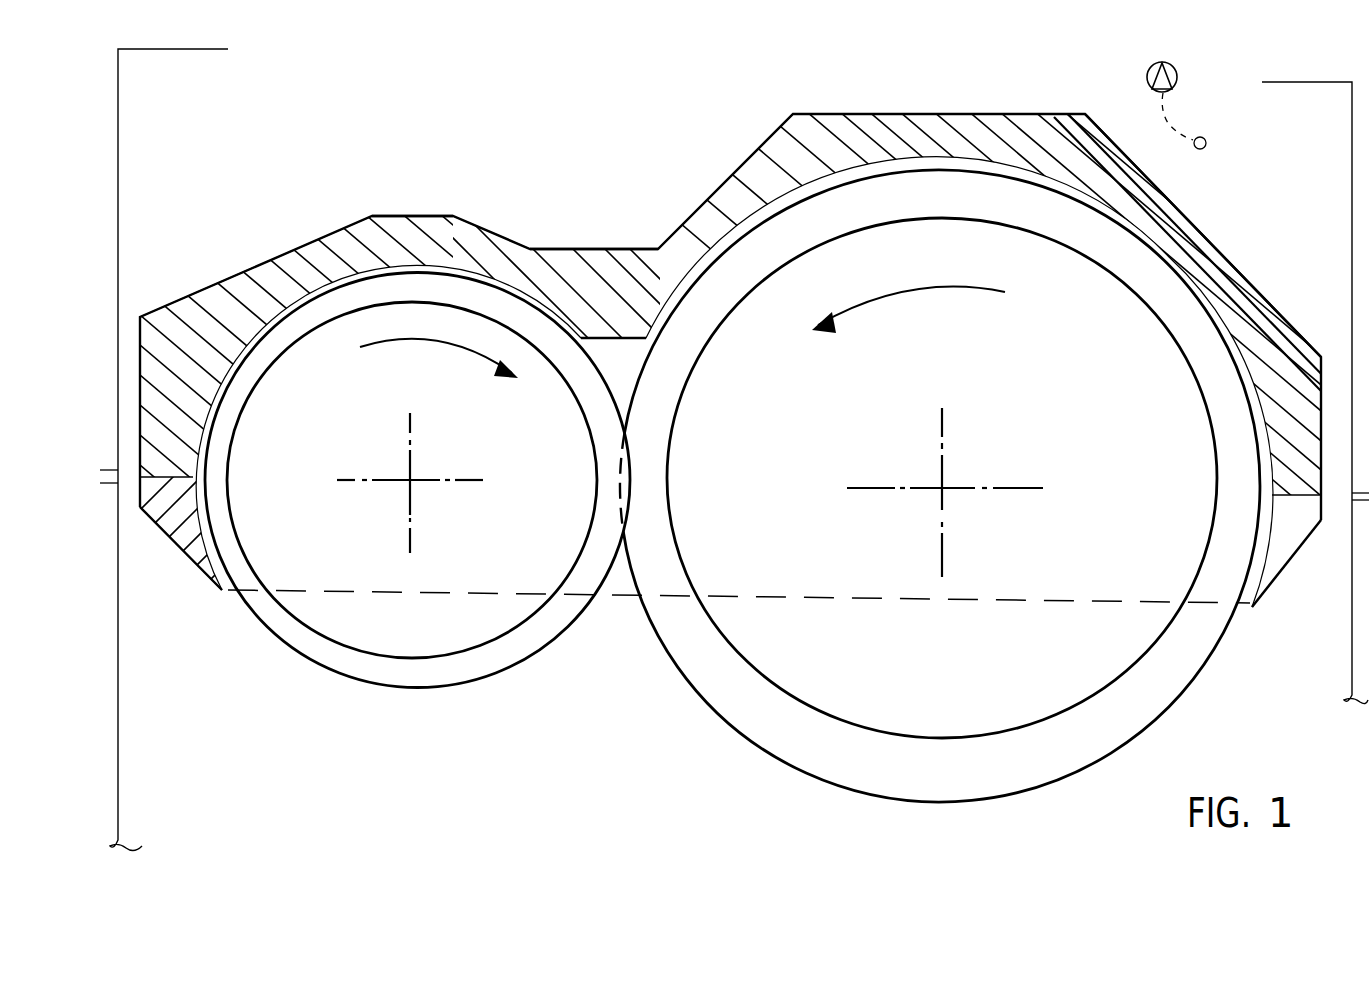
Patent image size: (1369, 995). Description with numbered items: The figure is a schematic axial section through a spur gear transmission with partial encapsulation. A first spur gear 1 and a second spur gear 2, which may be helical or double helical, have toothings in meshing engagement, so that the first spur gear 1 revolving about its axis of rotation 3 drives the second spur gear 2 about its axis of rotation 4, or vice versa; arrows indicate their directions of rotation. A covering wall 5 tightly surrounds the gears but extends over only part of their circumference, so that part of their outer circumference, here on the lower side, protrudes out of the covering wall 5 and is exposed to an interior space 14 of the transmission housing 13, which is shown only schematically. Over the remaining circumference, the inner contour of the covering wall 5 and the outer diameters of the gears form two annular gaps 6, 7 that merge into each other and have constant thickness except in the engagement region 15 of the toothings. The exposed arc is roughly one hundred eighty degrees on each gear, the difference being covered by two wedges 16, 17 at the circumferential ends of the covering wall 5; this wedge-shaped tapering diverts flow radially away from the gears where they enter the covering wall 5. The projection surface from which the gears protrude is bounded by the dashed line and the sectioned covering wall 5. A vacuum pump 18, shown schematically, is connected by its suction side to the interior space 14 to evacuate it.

The first spur gear 1 is at (489, 636).
The second spur gear 2 is at (785, 665).
The axis of rotation 3 is at (408, 482).
The axis of rotation 4 is at (940, 490).
The covering wall 5 is at (590, 272).
The annular gap 6 is at (452, 262).
The annular gap 7 is at (1158, 237).
The transmission housing 13 is at (118, 138).
The interior space 14 is at (302, 785).
The engagement region 15 is at (622, 376).
The wedge 16 is at (180, 518).
The wedge 17 is at (1276, 560).
The vacuum pump 18 is at (1180, 73).